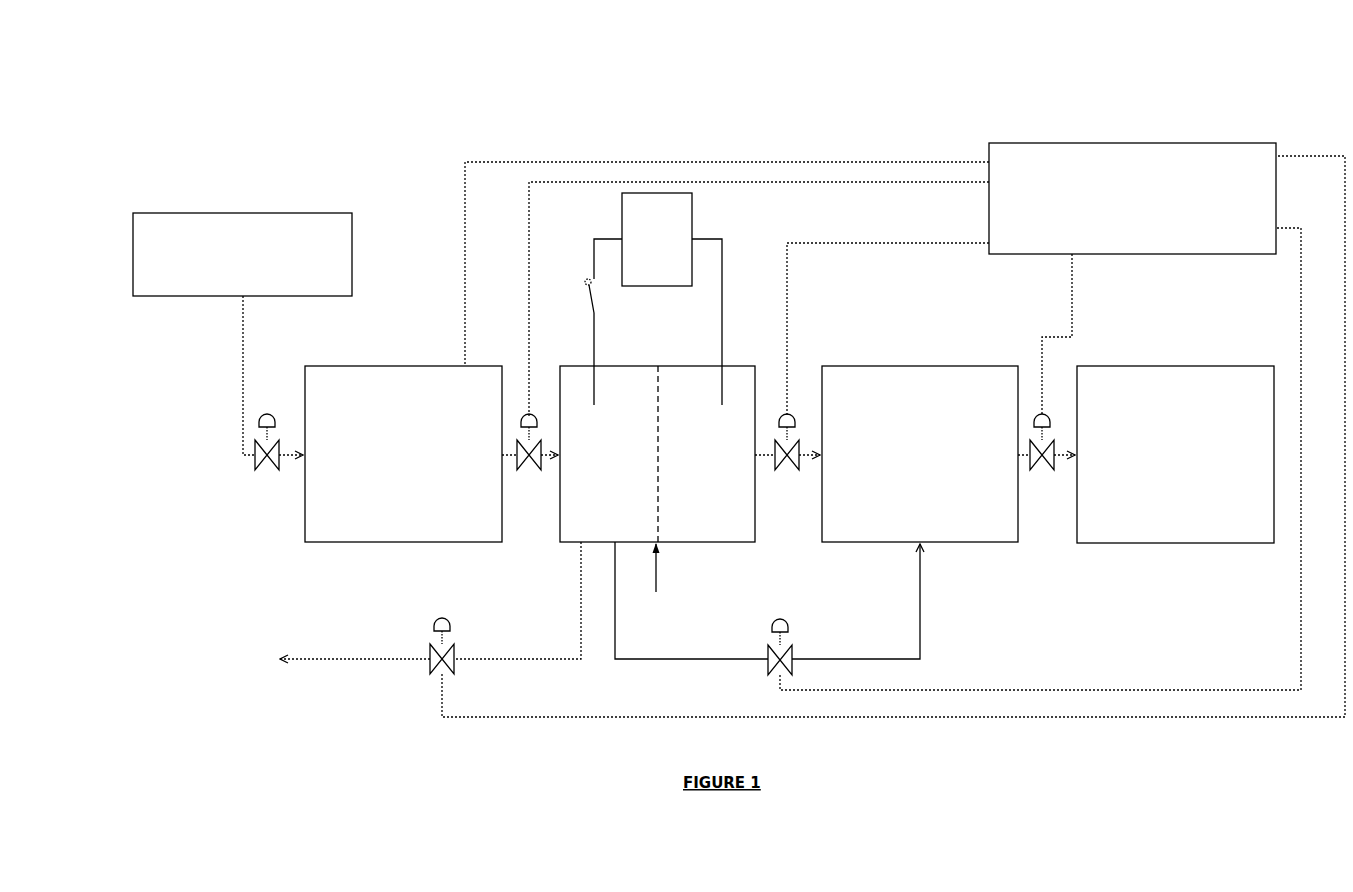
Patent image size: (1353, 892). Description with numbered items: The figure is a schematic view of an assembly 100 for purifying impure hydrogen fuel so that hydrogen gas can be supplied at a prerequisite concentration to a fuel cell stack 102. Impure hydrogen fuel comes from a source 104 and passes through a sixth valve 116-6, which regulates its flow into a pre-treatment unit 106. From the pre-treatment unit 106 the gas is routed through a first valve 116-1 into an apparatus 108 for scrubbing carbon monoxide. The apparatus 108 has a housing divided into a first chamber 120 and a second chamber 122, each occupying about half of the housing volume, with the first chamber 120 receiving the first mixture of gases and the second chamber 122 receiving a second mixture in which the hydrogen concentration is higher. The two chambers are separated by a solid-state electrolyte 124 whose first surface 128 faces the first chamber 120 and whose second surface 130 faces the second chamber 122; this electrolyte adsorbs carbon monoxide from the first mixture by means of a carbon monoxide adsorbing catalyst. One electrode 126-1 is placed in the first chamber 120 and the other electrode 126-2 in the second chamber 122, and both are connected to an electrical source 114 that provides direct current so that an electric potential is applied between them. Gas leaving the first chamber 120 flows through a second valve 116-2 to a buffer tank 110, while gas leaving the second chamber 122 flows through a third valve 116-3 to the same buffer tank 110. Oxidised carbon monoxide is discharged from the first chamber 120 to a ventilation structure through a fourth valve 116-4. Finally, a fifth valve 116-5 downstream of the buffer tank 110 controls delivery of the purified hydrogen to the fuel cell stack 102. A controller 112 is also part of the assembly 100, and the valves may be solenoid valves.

The assembly 100 is at (130, 97).
The fuel cell stack 102 is at (1188, 365).
The source 104 is at (250, 212).
The pre-treatment unit 106 is at (377, 365).
The apparatus for scrubbing carbon monoxide 108 is at (625, 365).
The buffer tank 110 is at (950, 365).
The controller 112 is at (1142, 141).
The electrical source 114 is at (695, 232).
The first valve 116-1 is at (529, 471).
The second valve 116-2 is at (797, 652).
The third valve 116-3 is at (787, 471).
The fourth valve 116-4 is at (427, 636).
The fifth valve 116-5 is at (1046, 471).
The sixth valve 116-6 is at (268, 471).
The first chamber 120 is at (575, 520).
The second chamber 122 is at (740, 520).
The solid-state electrolyte 124 is at (659, 579).
The electrode 126-1 is at (593, 383).
The electrode 126-2 is at (723, 387).
The first surface 128 is at (652, 520).
The second surface 130 is at (660, 520).